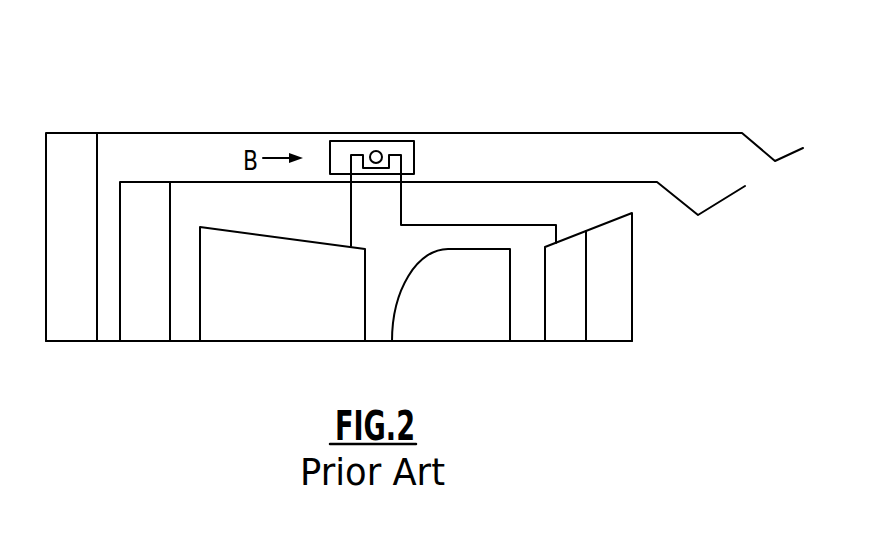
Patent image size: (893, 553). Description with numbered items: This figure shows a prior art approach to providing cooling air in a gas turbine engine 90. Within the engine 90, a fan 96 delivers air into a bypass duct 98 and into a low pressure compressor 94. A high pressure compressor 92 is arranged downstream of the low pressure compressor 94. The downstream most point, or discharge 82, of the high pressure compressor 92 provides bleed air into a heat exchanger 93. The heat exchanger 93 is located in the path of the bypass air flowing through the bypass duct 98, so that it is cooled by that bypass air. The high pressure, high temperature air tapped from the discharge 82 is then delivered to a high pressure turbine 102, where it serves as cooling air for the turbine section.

The engine 90 is at (345, 64).
The fan 96 is at (77, 155).
The bypass duct 98 is at (217, 155).
The low pressure compressor 94 is at (146, 327).
The high pressure compressor 92 is at (322, 322).
The heat exchanger 93 is at (333, 141).
The discharge 82 is at (351, 245).
The high pressure turbine 102 is at (563, 252).